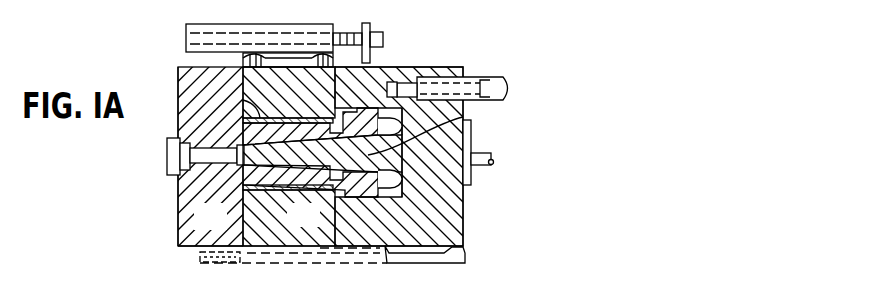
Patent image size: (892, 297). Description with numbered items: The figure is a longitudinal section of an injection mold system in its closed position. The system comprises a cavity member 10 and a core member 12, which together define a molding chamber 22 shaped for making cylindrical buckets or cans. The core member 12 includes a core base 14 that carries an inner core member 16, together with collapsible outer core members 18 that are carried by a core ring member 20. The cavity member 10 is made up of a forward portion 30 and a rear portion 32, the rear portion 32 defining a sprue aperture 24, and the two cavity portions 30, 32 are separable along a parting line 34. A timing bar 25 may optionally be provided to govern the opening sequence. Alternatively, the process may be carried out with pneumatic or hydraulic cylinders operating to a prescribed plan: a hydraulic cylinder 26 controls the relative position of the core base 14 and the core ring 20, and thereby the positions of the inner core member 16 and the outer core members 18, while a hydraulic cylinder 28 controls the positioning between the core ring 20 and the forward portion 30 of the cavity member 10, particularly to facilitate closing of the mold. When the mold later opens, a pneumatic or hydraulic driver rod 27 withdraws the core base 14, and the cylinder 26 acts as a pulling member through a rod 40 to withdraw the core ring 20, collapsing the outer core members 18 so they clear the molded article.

The cavity member 10 is at (176, 249).
The core member 12 is at (397, 60).
The core base 14 is at (443, 218).
The inner core member 16 is at (465, 121).
The collapsible outer core members 18 is at (243, 183).
The core ring member 20 is at (386, 247).
The molding chamber 22 is at (243, 92).
The sprue aperture 24 is at (183, 153).
The timing bar 25 is at (247, 257).
The hydraulic cylinder 26 is at (478, 73).
The driver rod 27 is at (477, 172).
The hydraulic cylinder 28 is at (205, 33).
The forward portion 30 is at (317, 225).
The rear portion 32 is at (223, 227).
The parting line 34 is at (247, 208).
The rod 40 is at (402, 83).